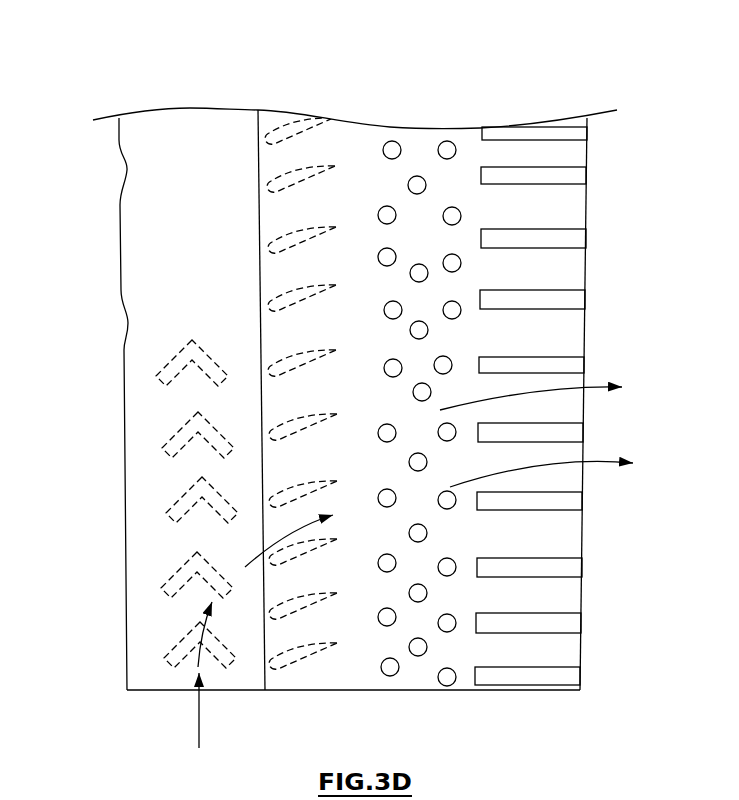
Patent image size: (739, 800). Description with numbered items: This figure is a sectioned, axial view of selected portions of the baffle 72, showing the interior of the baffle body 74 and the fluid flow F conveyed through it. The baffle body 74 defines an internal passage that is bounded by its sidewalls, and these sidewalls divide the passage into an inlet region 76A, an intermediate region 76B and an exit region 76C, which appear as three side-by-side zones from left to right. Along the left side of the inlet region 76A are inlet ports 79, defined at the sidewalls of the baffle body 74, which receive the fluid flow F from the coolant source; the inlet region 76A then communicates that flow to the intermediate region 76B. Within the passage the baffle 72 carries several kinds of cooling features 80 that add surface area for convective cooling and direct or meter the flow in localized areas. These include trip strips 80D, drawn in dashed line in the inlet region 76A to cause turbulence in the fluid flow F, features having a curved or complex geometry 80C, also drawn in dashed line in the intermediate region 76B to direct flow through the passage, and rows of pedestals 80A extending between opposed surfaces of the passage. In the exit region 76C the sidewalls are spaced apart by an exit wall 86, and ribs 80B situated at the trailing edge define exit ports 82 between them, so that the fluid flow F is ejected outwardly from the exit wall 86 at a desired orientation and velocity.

The baffle 72 is at (117, 85).
The baffle body 74 is at (193, 123).
The inlet region 76A is at (225, 122).
The intermediate region 76B is at (360, 137).
The exit region 76C is at (540, 128).
The inlet ports 79 is at (125, 170).
The cooling features 80 is at (393, 148).
The pedestals 80A is at (390, 668).
The ribs 80B is at (577, 130).
The features having a curved or complex geometry 80C is at (277, 138).
The trip strips 80D is at (218, 427).
The exit ports 82 is at (567, 213).
The exit wall 86 is at (587, 328).
The fluid flow F is at (199, 730).